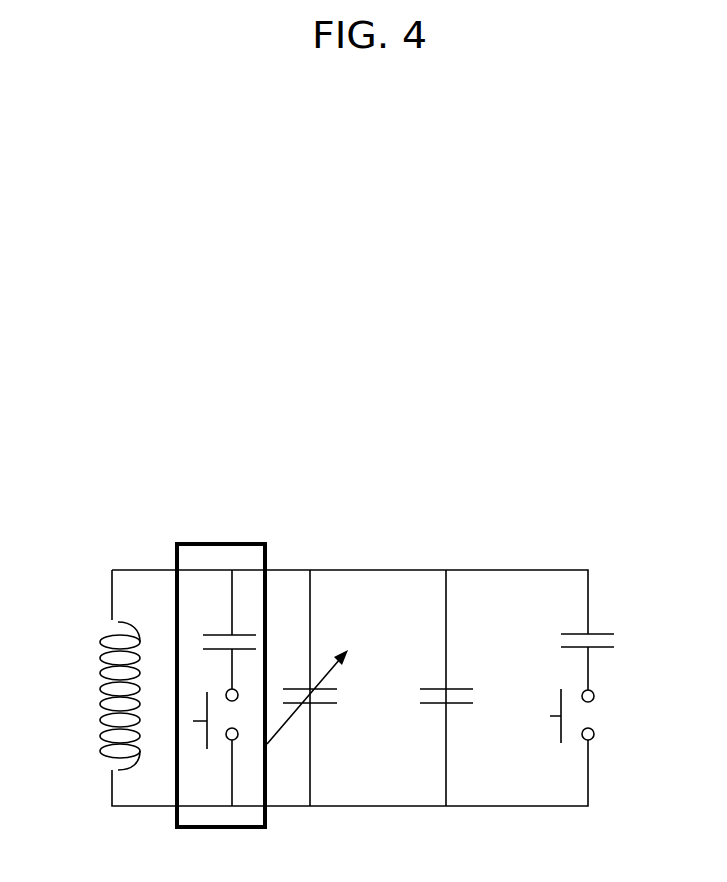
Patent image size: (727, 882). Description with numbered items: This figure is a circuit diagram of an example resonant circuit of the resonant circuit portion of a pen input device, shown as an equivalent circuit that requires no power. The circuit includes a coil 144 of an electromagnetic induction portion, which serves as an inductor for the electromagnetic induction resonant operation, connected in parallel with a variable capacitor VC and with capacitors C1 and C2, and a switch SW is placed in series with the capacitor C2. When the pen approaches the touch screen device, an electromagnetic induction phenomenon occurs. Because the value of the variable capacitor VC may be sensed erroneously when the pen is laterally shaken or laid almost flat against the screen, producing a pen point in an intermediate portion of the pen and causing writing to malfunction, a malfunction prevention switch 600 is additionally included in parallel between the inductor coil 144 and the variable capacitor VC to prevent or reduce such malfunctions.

The malfunction prevention switch 600 is at (195, 533).
The coil 144 is at (93, 706).
The variable capacitor VC is at (314, 703).
The capacitor C1 is at (457, 724).
The capacitor C2 is at (602, 624).
The switch SW is at (600, 728).